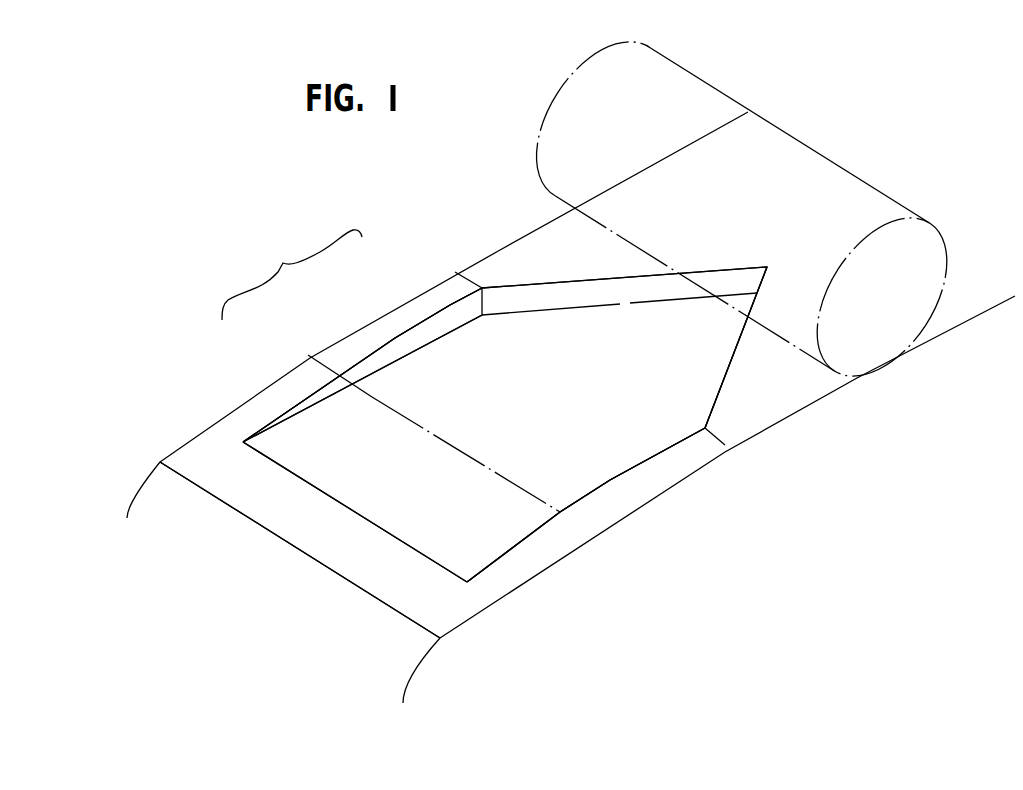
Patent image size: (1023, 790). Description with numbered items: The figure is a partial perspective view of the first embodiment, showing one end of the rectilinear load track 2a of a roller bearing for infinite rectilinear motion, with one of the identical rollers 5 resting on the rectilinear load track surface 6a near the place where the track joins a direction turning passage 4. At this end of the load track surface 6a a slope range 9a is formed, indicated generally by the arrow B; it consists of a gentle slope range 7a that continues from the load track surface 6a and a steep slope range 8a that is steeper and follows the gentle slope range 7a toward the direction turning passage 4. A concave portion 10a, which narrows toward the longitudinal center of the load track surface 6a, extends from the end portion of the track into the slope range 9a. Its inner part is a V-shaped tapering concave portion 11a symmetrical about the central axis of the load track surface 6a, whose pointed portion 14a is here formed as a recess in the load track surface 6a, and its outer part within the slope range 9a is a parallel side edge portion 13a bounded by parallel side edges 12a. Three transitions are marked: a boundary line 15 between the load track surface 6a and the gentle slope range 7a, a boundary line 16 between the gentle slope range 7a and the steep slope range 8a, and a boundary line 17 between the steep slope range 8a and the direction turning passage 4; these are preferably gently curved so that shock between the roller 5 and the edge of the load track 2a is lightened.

The rectilinear load track 2a is at (522, 226).
The direction turning passage 4 is at (547, 407).
The roller 5 is at (583, 88).
The rectilinear load track surface 6a is at (503, 265).
The gentle slope range 7a is at (385, 327).
The steep slope range 8a is at (253, 408).
The slope range 9a is at (352, 336).
The concave portion 10a is at (672, 390).
The V-shaped tapering concave portion 11a is at (702, 362).
The parallel side edge 12a is at (430, 322).
The parallel side edge portion 13a is at (467, 520).
The pointed portion 14a is at (765, 265).
The boundary line 15 is at (468, 277).
The boundary line 16 is at (323, 367).
The boundary line 17 is at (193, 480).
The embossed portion B is at (257, 198).